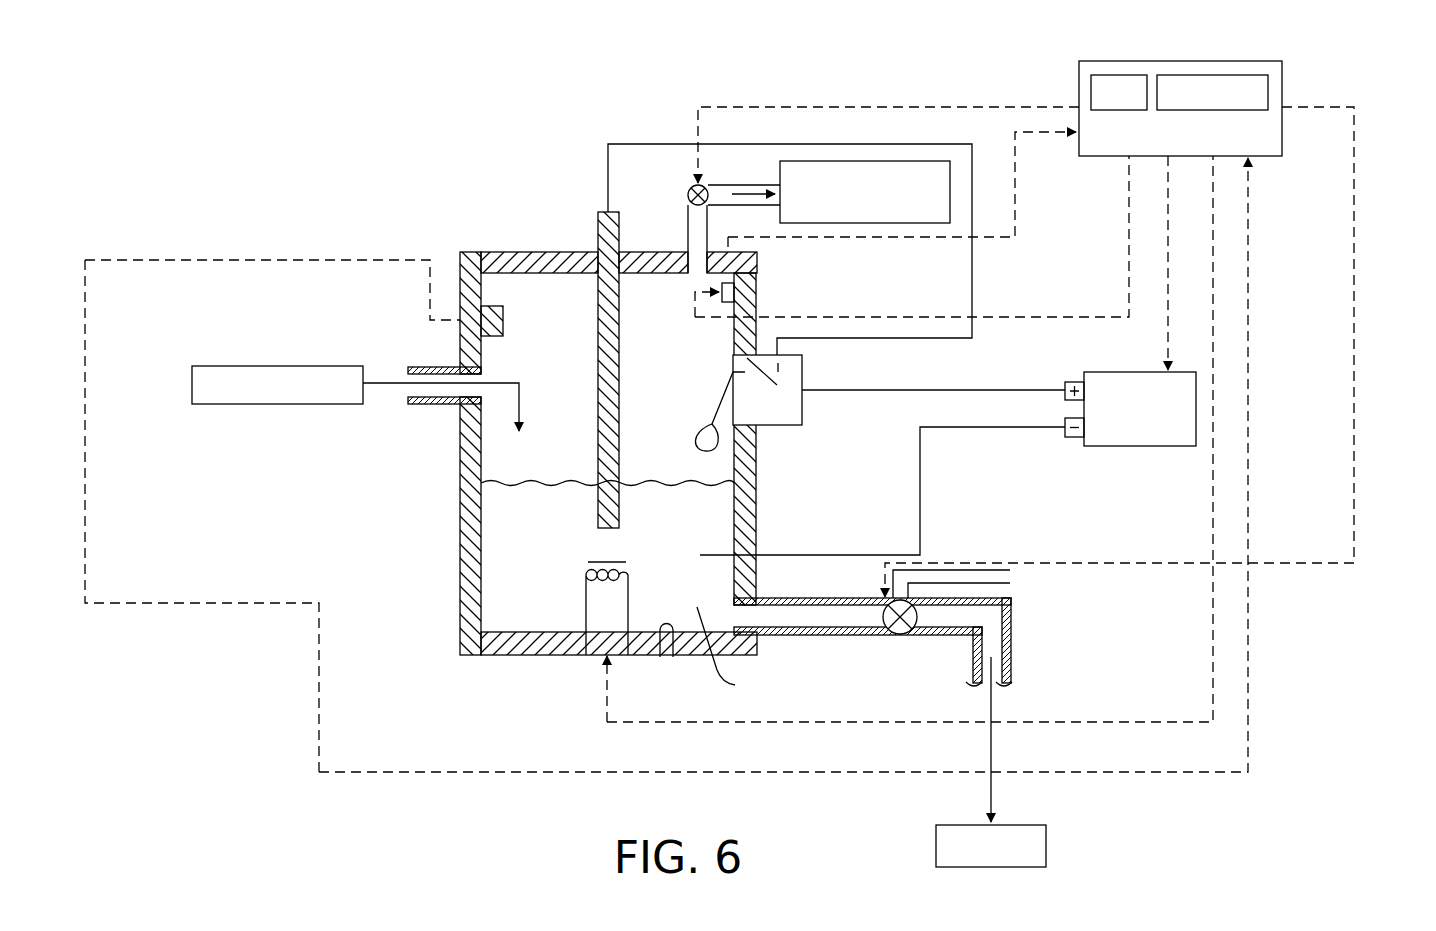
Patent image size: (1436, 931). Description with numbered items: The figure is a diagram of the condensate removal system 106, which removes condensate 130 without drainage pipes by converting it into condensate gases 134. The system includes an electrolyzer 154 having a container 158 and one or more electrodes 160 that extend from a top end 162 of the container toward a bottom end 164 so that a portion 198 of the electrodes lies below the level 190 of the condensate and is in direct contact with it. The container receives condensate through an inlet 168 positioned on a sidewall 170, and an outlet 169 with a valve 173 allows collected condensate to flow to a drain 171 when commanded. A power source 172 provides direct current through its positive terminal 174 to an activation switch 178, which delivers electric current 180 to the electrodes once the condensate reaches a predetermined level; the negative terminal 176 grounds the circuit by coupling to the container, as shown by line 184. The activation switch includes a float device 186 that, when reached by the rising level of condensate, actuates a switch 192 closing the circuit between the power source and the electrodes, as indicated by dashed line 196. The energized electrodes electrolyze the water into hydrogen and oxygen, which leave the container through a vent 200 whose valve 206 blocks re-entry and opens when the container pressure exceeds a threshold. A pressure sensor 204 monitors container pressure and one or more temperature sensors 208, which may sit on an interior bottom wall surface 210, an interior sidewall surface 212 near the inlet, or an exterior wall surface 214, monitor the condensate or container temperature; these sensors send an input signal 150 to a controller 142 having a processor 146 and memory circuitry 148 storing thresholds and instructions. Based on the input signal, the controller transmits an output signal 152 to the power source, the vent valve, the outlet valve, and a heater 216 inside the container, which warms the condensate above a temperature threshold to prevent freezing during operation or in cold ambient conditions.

The condensate removal system 106 is at (260, 90).
The condensate 130 is at (277, 365).
The condensate gases 134 is at (865, 160).
The controller 142 is at (1282, 84).
The processor 146 is at (1120, 74).
The memory circuitry 148 is at (1200, 74).
The input signal 150 is at (1018, 195).
The output signal 152 is at (890, 106).
The electrolyzer 154 is at (455, 572).
The container 158 is at (757, 584).
The electrodes 160 is at (597, 240).
The top end 162 is at (495, 243).
The bottom end 164 is at (552, 668).
The inlet 168 is at (440, 366).
The outlet 169 is at (1011, 640).
The sidewall 170 is at (462, 533).
The drain 171 is at (1047, 843).
The power source 172 is at (1140, 447).
The valve 173 is at (902, 634).
The positive terminal 174 is at (1076, 380).
The negative terminal 176 is at (1076, 439).
The activation switch 178 is at (803, 407).
The electric current 180 is at (642, 144).
The line 184 is at (920, 518).
The float device 186 is at (700, 420).
The level 190 is at (517, 483).
The switch 192 is at (733, 363).
The dashed line 196 is at (778, 371).
The portion 198 is at (586, 509).
The vent 200 is at (687, 237).
The pressure sensor 204 is at (720, 290).
The valve 206 is at (688, 186).
The temperature sensor 208 is at (505, 310).
The interior bottom wall surface 210 is at (662, 668).
The interior sidewall surface 212 is at (734, 537).
The exterior wall surface 214 is at (462, 620).
The heater 216 is at (630, 600).